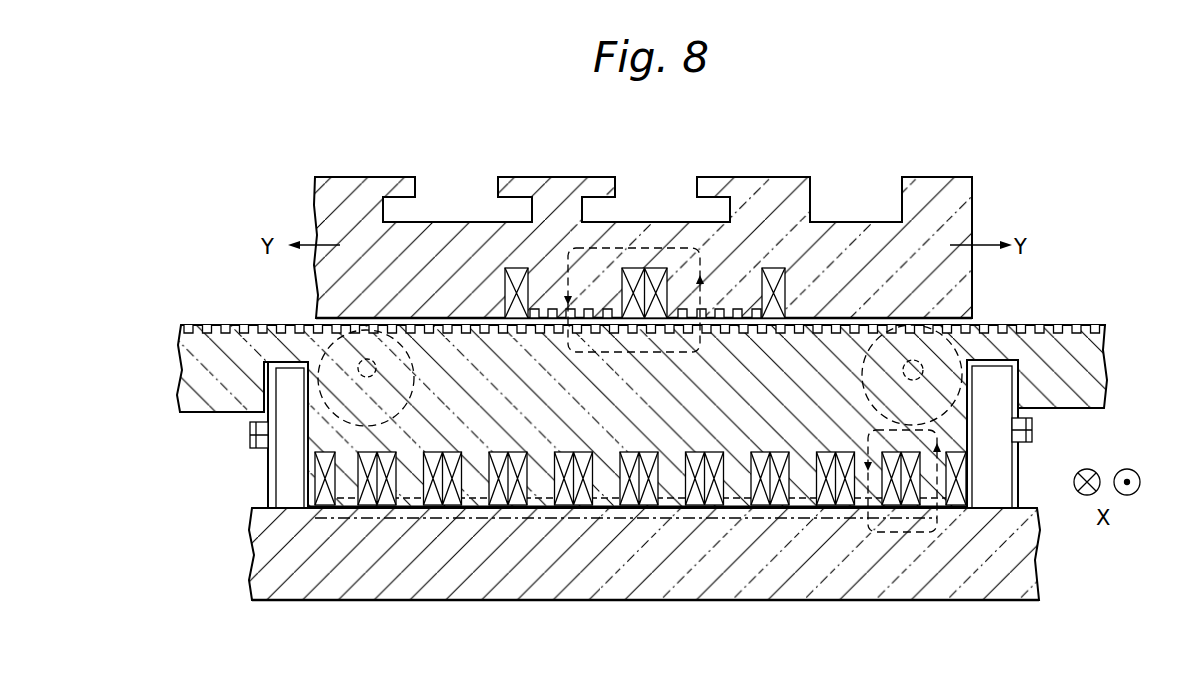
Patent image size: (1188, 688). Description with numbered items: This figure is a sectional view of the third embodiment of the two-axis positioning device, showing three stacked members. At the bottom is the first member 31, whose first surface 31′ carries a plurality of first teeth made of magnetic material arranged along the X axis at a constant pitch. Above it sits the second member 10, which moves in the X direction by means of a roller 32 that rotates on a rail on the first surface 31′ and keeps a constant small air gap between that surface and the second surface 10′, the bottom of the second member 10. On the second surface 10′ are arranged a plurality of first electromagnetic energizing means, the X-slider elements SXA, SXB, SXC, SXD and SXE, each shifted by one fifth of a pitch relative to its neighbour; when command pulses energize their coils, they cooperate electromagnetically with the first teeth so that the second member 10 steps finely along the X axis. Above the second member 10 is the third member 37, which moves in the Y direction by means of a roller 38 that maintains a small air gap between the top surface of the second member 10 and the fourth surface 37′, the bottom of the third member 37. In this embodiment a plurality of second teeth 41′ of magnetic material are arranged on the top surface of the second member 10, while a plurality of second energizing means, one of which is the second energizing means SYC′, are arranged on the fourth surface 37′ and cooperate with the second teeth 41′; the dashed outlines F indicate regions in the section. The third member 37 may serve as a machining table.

The third member 37 is at (778, 174).
The second energizing means SYC′ is at (720, 287).
The flux path region F is at (640, 247).
The second teeth 41′ is at (806, 328).
The fourth surface 37′ is at (838, 348).
The second member 10 is at (490, 417).
The second surface 10′ is at (421, 520).
The first member 31 is at (707, 605).
The first surface 31′ is at (392, 503).
The roller 32 is at (997, 488).
The roller 38 is at (1004, 424).
The X-slider element SXA is at (346, 487).
The X-slider element SXB is at (542, 487).
The X-slider element SXC is at (674, 487).
The X-slider element SXD is at (804, 487).
The X-slider element SXE is at (936, 487).